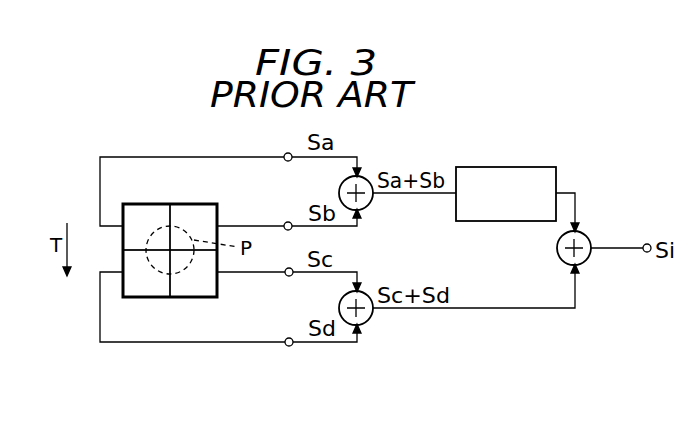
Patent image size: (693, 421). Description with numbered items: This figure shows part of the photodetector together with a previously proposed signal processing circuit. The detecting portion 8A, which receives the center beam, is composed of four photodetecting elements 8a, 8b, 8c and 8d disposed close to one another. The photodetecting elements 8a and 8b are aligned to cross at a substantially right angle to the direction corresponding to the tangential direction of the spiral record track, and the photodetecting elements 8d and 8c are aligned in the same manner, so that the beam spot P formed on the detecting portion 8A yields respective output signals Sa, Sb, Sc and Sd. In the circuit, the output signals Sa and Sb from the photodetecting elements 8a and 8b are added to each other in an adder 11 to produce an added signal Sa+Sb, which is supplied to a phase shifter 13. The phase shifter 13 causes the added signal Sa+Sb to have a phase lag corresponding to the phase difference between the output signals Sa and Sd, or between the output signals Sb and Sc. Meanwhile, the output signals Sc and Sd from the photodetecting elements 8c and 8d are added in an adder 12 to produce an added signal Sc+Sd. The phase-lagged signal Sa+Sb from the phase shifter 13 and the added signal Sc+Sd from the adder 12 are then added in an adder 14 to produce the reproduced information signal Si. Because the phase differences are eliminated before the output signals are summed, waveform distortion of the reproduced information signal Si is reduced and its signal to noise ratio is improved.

The detecting portion 8A is at (111, 243).
The photodetecting element 8a is at (158, 208).
The photodetecting element 8b is at (199, 210).
The photodetecting element 8c is at (200, 290).
The photodetecting element 8d is at (160, 290).
The adder 11 is at (370, 205).
The adder 12 is at (371, 320).
The phase shifter 13 is at (534, 167).
The adder 14 is at (586, 261).